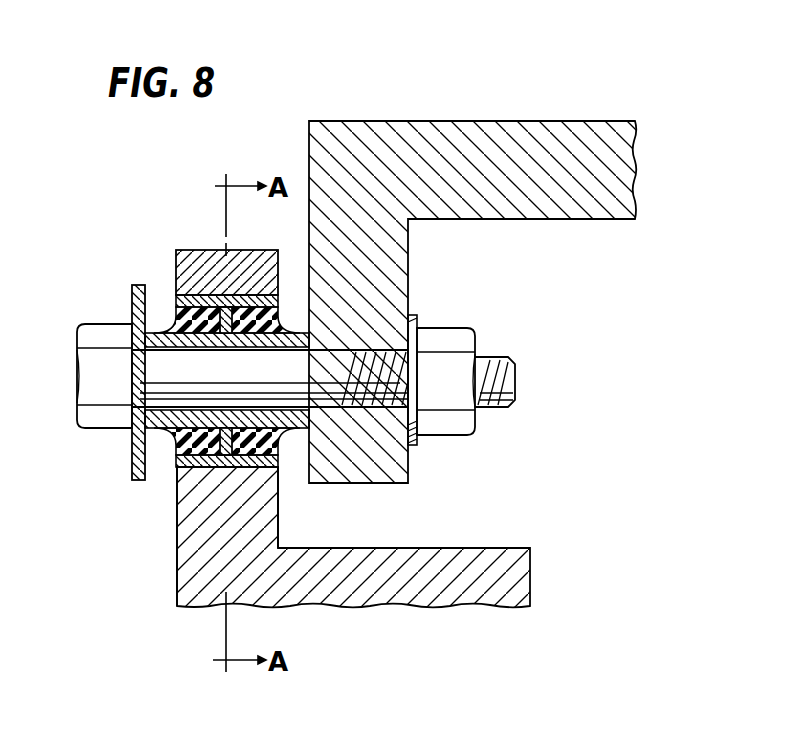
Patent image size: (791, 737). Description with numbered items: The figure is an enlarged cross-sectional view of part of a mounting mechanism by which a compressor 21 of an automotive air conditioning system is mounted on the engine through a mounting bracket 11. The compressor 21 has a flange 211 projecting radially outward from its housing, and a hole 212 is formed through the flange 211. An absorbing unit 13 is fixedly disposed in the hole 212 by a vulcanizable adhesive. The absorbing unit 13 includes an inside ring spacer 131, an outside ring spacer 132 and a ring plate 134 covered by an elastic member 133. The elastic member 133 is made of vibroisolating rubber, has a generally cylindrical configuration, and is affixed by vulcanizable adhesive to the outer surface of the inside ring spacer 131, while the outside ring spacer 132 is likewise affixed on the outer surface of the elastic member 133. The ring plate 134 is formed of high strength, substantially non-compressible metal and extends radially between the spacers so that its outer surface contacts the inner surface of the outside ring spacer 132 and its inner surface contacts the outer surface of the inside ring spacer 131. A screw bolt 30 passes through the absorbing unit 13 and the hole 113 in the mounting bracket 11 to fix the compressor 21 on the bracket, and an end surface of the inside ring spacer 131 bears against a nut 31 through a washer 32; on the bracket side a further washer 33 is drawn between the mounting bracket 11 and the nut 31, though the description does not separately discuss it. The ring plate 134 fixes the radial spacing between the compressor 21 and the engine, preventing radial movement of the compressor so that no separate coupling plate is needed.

The mounting bracket 11 is at (312, 150).
The hole 113 is at (370, 413).
The absorbing unit 13 is at (166, 316).
The inside ring spacer 131 is at (293, 430).
The outside ring spacer 132 is at (280, 470).
The elastic member 133 is at (176, 441).
The ring plate 134 is at (218, 297).
The compressor 21 is at (237, 580).
The flange 211 is at (193, 533).
The hole 212 is at (177, 508).
The screw bolt 30 is at (90, 386).
The nut 31 is at (458, 427).
The washer 32 is at (132, 452).
The washer 33 is at (412, 447).